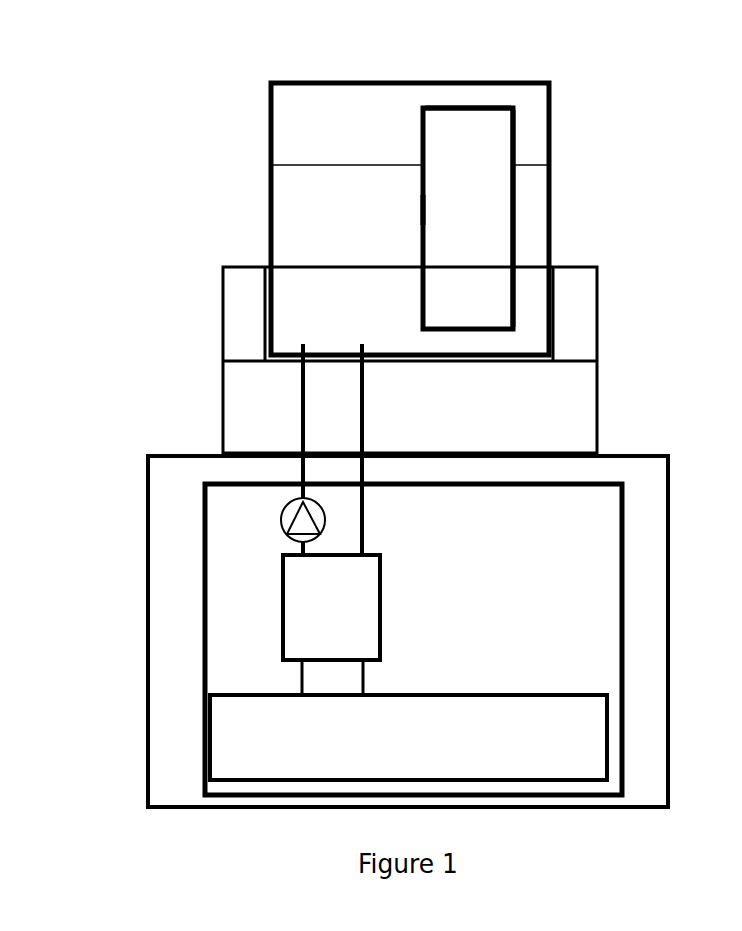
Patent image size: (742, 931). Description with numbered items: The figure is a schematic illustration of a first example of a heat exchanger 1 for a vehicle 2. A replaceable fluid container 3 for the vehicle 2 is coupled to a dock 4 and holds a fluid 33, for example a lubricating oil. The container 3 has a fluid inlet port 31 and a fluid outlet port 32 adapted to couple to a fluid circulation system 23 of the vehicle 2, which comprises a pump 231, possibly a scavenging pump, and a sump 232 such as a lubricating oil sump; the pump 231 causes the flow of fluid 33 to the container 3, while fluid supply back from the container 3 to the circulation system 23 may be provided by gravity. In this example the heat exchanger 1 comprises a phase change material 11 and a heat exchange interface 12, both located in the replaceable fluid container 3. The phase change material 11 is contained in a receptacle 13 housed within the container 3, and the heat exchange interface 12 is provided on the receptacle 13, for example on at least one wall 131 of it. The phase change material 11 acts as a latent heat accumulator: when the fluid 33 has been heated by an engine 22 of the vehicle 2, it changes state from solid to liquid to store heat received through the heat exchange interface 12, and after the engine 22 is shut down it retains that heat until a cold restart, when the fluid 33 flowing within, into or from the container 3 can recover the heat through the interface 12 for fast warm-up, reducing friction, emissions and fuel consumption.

The heat exchanger 1 is at (558, 153).
The vehicle 2 is at (647, 526).
The engine 22 is at (553, 537).
The fluid circulation system 23 is at (188, 707).
The pump 231 is at (281, 521).
The sump 232 is at (240, 762).
The replaceable fluid container 3 is at (323, 125).
The fluid 33 is at (371, 286).
The fluid inlet port 31 is at (302, 352).
The fluid outlet port 32 is at (362, 345).
The dock 4 is at (530, 404).
The phase change material 11 is at (485, 254).
The heat exchange interface 12 is at (514, 193).
The receptacle 13 is at (467, 107).
The wall 131 is at (422, 210).